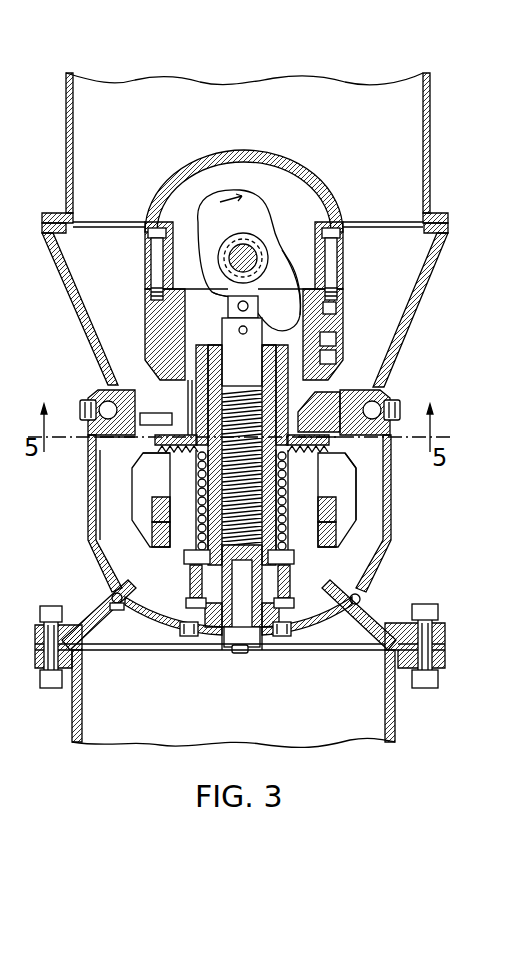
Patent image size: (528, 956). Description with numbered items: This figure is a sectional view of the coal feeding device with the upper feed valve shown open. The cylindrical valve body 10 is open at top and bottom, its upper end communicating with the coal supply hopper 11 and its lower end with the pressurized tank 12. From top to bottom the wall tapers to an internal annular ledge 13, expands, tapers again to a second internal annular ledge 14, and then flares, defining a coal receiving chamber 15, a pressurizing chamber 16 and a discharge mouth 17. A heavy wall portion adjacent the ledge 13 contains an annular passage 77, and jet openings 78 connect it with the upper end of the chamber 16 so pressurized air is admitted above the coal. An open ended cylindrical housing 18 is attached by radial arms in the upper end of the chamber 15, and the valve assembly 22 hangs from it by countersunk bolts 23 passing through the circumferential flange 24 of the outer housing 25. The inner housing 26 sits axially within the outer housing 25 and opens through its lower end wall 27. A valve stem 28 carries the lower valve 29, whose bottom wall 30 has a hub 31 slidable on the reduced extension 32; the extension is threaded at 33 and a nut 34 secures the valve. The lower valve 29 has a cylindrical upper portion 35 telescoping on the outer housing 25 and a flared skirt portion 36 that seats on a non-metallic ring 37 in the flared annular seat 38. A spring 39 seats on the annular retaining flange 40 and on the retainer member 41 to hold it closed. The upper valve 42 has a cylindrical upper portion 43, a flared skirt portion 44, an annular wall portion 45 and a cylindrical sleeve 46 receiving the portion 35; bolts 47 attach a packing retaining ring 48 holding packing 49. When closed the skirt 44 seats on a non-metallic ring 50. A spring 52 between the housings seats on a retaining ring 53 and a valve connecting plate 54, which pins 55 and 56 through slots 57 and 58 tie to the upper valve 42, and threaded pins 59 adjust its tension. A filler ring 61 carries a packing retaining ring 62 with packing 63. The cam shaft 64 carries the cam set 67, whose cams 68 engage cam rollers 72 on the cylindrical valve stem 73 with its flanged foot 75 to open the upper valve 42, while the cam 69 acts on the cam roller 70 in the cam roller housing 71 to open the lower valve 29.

The valve body 10 is at (422, 297).
The coal supply hopper 11 is at (430, 165).
The pressurized tank 12 is at (396, 722).
The internal annular ledge 13 is at (150, 412).
The second internal annular ledge 14 is at (125, 592).
The coal receiving chamber 15 is at (357, 284).
The pressurizing chamber 16 is at (333, 550).
The discharge mouth 17 is at (345, 652).
The cylindrical housing 18 is at (343, 258).
The valve assembly 22 is at (312, 392).
The countersunk bolts 23 is at (150, 254).
The circumferential flange 24 is at (343, 304).
The outer housing 25 is at (276, 368).
The inner housing 26 is at (262, 412).
The lower end wall 27 is at (292, 598).
The valve stem 28 is at (266, 516).
The lower valve 29 is at (150, 572).
The bottom wall 30 is at (284, 620).
The hub 31 is at (212, 630).
The reduced extension 32 is at (236, 652).
The threaded end 33 is at (250, 648).
The nut 34 is at (242, 658).
The cylindrical upper portion 35 is at (165, 480).
The flared skirt portion 36 is at (322, 584).
The non-metallic ring 37 is at (362, 600).
The flared annular seat 38 is at (116, 610).
The spring 39 is at (276, 385).
The annular retaining flange 40 is at (266, 492).
The retainer member 41 is at (222, 338).
The upper valve 42 is at (340, 478).
The cylindrical upper portion 43 is at (163, 378).
The flared skirt portion 44 is at (336, 456).
The annular wall portion 45 is at (133, 480).
The cylindrical sleeve 46 is at (150, 507).
The bolts 47 is at (322, 512).
The packing retaining ring 48 is at (322, 528).
The packing 49 is at (152, 532).
The non-metallic ring 50 is at (150, 437).
The spring 52 is at (294, 478).
The retaining ring 53 is at (266, 550).
The valve connecting plate 54 is at (283, 466).
The pin 55 is at (322, 442).
The pin 56 is at (136, 462).
The slot 57 is at (312, 410).
The slot 58 is at (176, 418).
The pins 59 is at (180, 620).
The filler ring 61 is at (338, 322).
The packing retaining ring 62 is at (336, 348).
The packing 63 is at (336, 366).
The cam shaft 64 is at (262, 262).
The cam set 67 is at (254, 250).
The cams 68 is at (222, 292).
The cam 69 is at (264, 196).
The cam roller 70 is at (278, 281).
The cam roller housing 71 is at (228, 304).
The cam rollers 72 is at (266, 332).
The cylindrical valve stem 73 is at (276, 350).
The flanged foot 75 is at (192, 432).
The annular passage 77 is at (106, 408).
The jet openings 78 is at (382, 425).